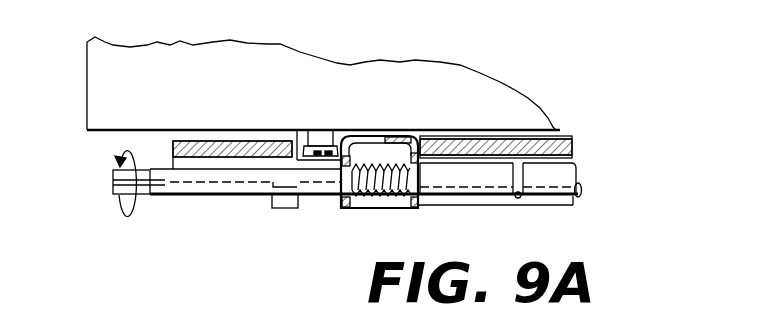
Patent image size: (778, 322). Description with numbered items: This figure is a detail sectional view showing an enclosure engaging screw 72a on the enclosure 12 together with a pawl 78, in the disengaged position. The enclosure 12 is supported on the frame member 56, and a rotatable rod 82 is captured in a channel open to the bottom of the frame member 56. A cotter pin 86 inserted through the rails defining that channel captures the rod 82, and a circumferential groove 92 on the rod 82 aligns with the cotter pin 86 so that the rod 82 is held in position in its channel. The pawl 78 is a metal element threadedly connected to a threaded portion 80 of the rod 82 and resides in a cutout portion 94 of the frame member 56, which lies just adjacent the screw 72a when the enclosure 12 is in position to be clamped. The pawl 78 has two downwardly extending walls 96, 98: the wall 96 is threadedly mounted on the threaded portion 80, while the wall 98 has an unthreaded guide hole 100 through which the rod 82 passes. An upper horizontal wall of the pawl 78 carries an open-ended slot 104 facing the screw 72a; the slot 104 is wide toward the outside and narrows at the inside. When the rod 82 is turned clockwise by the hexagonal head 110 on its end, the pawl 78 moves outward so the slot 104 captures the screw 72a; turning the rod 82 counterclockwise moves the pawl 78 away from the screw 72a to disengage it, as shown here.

The enclosure 12 is at (168, 98).
The frame member 56 is at (455, 152).
The enclosure engaging screw 72a is at (318, 135).
The pawl 78 is at (372, 139).
The threaded portion 80 is at (378, 206).
The rotatable rod 82 is at (571, 175).
The cotter pin 86 is at (518, 200).
The circumferential groove 92 is at (518, 160).
The cutout portion 94 is at (300, 135).
The downwardly extending wall 96 is at (413, 206).
The downwardly extending wall 98 is at (348, 209).
The guide hole 100 is at (338, 200).
The slot 104 is at (362, 138).
The hexagonal head 110 is at (118, 198).